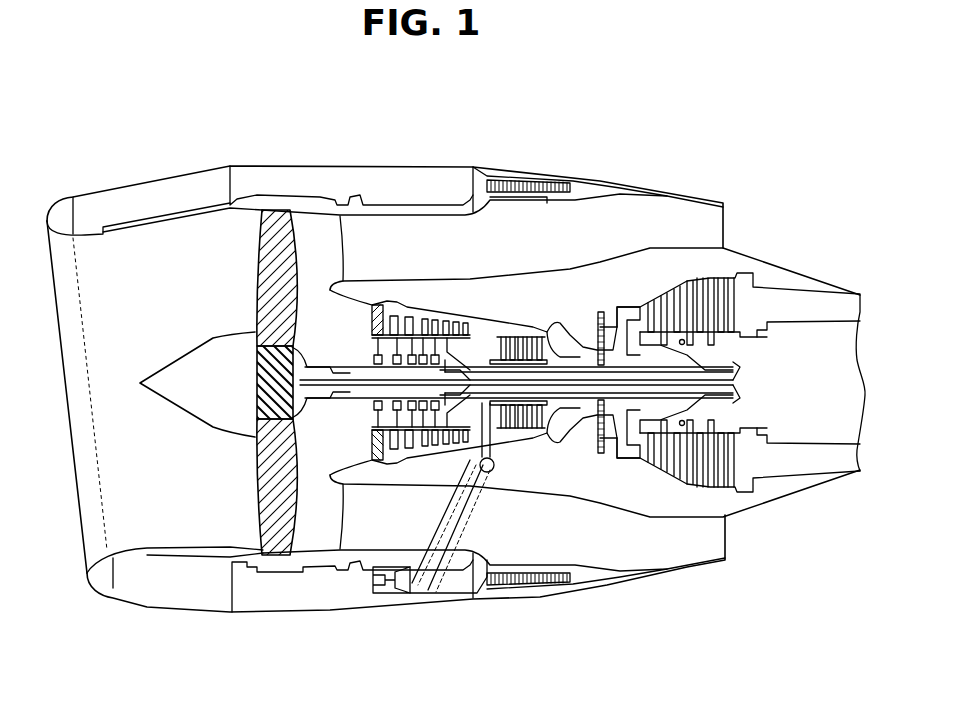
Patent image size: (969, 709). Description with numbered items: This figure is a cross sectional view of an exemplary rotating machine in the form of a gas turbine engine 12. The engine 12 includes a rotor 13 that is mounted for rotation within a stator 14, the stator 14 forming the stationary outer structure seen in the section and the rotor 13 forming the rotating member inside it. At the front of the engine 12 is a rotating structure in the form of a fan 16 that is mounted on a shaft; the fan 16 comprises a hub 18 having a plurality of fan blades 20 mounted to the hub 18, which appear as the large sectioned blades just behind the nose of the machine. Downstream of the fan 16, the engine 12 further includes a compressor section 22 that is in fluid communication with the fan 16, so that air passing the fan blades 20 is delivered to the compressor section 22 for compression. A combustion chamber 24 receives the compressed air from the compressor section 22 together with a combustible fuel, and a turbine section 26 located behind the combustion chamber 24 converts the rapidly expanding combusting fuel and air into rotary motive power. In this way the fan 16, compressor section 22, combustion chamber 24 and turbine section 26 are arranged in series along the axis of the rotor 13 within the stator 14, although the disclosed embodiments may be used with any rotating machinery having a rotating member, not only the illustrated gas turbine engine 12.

The gas turbine engine 12 is at (452, 337).
The rotor 13 is at (576, 336).
The stator 14 is at (420, 389).
The fan 16 is at (124, 505).
The hub 18 is at (147, 412).
The fan blades 20 is at (280, 382).
The compressor section 22 is at (421, 278).
The combustion chamber 24 is at (510, 536).
The turbine section 26 is at (732, 444).